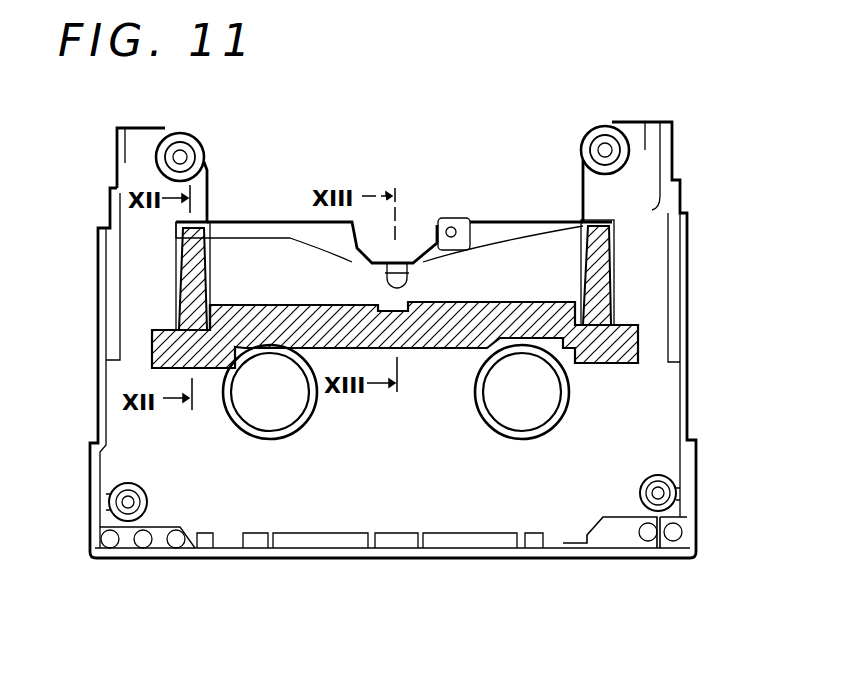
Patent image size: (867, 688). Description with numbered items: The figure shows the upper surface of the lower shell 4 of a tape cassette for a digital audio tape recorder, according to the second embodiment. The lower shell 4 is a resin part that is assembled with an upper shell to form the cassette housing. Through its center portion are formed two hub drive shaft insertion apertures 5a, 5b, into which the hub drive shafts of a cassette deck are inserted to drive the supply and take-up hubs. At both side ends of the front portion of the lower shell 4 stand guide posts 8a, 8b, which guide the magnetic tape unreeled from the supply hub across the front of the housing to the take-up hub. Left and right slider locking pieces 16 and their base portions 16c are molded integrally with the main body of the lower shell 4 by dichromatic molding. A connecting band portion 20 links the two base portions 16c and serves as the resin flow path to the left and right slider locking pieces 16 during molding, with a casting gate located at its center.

The lower shell 4 is at (417, 503).
The hub drive shaft insertion aperture 5a is at (283, 412).
The hub drive shaft insertion aperture 5b is at (490, 395).
The guide post 8a is at (200, 143).
The guide post 8b is at (582, 143).
The slider locking piece 16 is at (180, 268).
The base portion 16c is at (165, 352).
The connecting band portion 20 is at (460, 318).